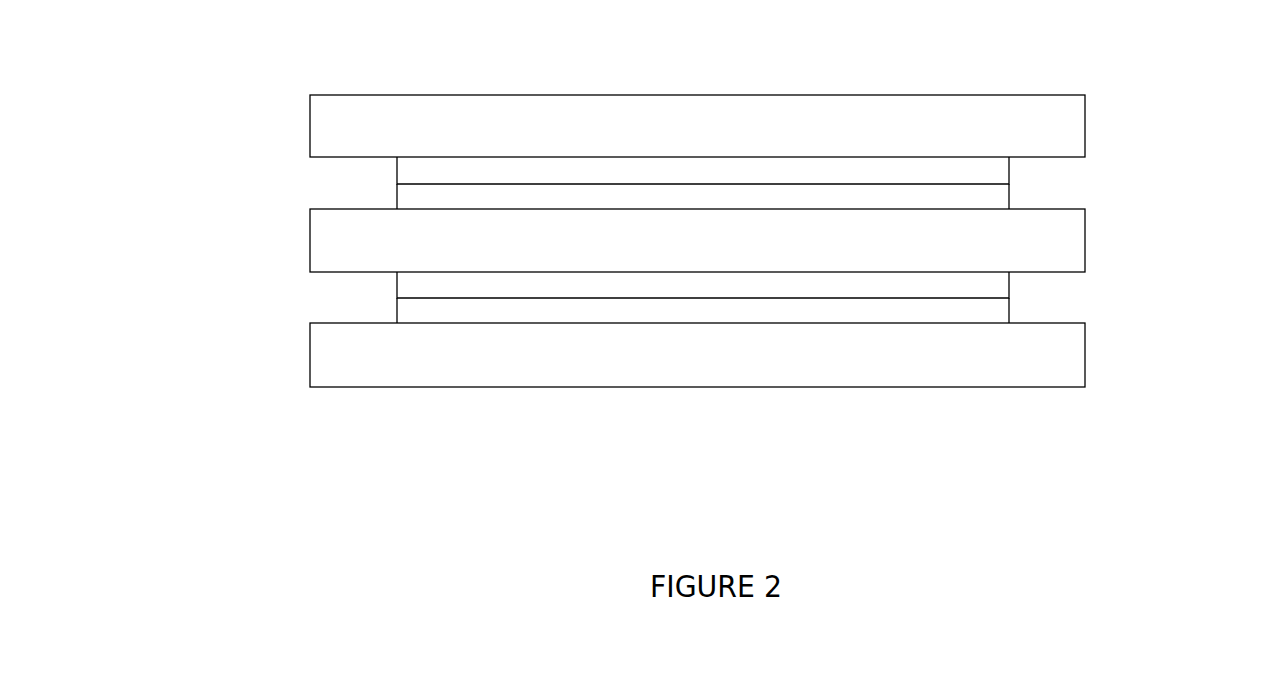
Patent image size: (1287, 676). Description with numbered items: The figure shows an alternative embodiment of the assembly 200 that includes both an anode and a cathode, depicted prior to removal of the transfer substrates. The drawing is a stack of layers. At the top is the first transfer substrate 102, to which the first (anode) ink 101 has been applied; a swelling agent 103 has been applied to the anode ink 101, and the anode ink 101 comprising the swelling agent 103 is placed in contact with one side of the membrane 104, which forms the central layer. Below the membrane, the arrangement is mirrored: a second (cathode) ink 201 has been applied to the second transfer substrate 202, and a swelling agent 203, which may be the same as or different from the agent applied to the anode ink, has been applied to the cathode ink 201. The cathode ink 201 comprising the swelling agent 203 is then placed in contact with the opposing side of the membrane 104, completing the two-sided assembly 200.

The assembly 200 is at (684, 203).
The first transfer substrate 102 is at (298, 106).
The first (anode) ink 101 is at (388, 170).
The swelling agent 103 is at (1022, 197).
The membrane 104 is at (298, 243).
The swelling agent 203 is at (387, 283).
The second (cathode) ink 201 is at (1022, 311).
The second transfer substrate 202 is at (298, 335).